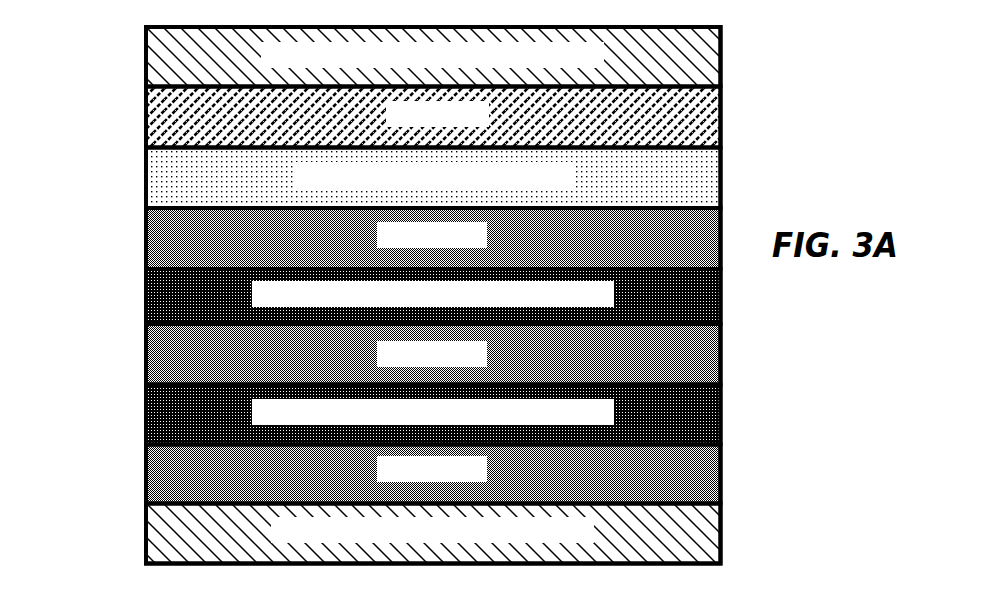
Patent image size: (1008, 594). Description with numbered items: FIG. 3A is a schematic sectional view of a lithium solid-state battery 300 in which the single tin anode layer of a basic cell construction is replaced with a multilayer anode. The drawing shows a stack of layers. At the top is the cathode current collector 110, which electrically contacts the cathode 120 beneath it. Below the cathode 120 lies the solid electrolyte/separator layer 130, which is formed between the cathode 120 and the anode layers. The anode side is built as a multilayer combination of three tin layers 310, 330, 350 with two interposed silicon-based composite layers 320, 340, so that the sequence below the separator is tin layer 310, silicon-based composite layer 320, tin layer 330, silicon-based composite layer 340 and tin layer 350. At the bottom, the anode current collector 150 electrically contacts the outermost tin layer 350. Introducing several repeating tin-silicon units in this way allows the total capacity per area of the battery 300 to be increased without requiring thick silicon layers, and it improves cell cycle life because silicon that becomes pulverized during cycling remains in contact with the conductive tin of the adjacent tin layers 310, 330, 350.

The battery 300 is at (112, 194).
The cathode current collector 110 is at (687, 66).
The cathode 120 is at (687, 126).
The solid electrolyte/separator layer 130 is at (687, 186).
The tin layer 310 is at (687, 246).
The silicon-based composite layer 320 is at (687, 306).
The tin layer 330 is at (687, 366).
The silicon-based composite layer 340 is at (687, 424).
The tin layer 350 is at (687, 480).
The anode current collector 150 is at (687, 542).